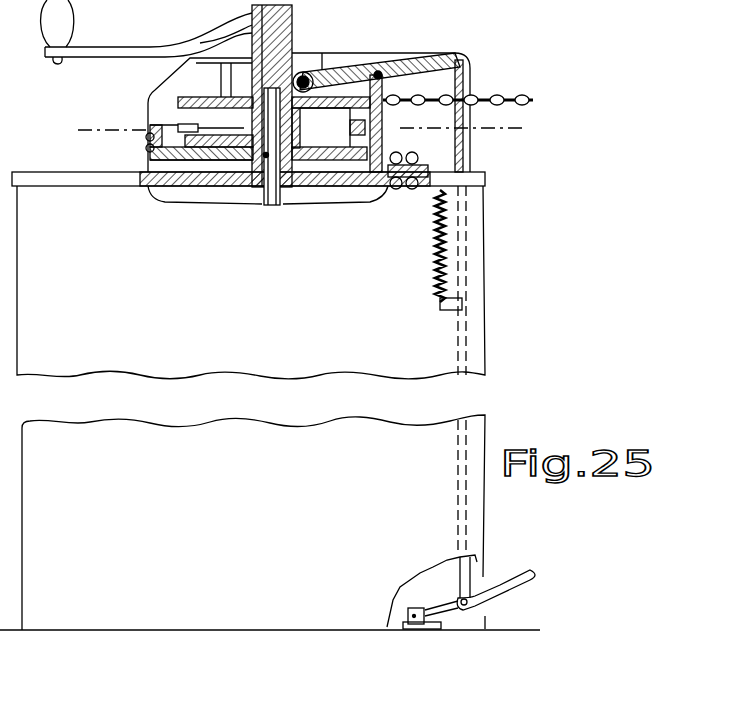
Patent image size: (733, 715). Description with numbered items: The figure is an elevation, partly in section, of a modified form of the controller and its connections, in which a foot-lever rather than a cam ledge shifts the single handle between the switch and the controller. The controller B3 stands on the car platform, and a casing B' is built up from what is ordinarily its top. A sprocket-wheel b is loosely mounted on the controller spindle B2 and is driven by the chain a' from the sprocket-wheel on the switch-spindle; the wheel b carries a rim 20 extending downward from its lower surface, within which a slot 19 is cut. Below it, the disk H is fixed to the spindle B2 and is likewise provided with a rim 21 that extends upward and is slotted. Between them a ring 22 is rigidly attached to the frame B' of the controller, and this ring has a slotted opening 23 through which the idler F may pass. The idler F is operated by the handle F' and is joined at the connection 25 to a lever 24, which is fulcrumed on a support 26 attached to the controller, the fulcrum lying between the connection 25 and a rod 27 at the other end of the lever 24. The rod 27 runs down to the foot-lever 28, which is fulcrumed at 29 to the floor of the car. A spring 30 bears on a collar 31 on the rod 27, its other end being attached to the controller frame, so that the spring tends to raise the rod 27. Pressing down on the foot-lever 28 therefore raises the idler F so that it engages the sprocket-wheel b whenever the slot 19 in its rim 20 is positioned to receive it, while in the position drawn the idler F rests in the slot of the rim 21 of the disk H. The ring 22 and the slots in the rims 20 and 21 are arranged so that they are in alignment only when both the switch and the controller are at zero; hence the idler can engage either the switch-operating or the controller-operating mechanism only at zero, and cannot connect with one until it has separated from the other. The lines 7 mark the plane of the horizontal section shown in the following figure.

The handle F' is at (146, 32).
The casing B' is at (185, 115).
The sprocket-wheel b is at (185, 122).
The section lines 7 is at (303, 128).
The slot 19 is at (190, 118).
The slotted opening 23 is at (219, 136).
The ring 22 is at (172, 140).
The idler-lever F is at (285, 183).
The rim 20 is at (348, 118).
The rim 21 is at (350, 133).
The connection 25 is at (323, 72).
The lever 24 is at (428, 62).
The chain a' is at (458, 85).
The support 26 is at (392, 160).
The rod 27 is at (465, 155).
The spindle B2 is at (288, 210).
The disk H is at (353, 157).
The controller B3 is at (270, 401).
The spring 30 is at (437, 250).
The collar 31 is at (462, 305).
The foot-lever 28 is at (520, 570).
The fulcrum 29 is at (418, 630).